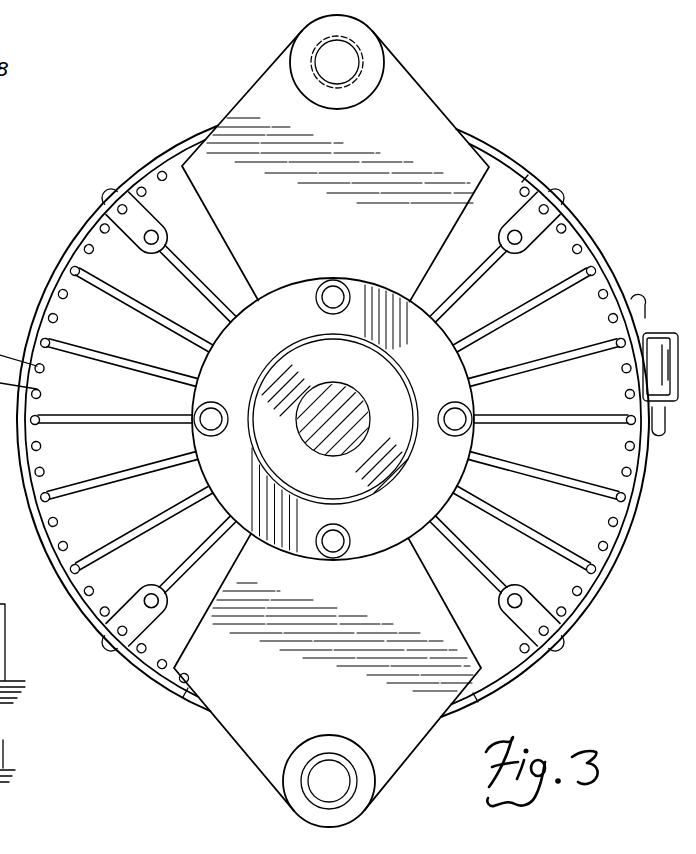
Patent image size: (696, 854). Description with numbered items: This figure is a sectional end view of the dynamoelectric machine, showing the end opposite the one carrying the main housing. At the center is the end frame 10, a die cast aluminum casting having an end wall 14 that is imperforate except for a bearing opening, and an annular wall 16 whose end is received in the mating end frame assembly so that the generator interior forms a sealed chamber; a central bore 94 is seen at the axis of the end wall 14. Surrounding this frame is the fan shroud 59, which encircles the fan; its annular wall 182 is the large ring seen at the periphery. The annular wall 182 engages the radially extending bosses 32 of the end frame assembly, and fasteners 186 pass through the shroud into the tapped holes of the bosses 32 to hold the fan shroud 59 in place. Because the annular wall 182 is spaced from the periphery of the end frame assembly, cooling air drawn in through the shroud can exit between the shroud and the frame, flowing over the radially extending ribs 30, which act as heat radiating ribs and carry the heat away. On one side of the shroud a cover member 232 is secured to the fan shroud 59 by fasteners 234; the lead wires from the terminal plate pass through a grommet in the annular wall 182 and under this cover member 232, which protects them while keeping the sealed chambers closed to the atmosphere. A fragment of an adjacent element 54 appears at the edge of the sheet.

The end frame 10 is at (416, 82).
The end wall 14 is at (566, 273).
The annular wall 16 is at (506, 176).
The radially extending ribs 30 is at (603, 549).
The radially extending bosses 32 is at (130, 194).
The fan shroud 59 is at (596, 605).
The central hub bore 94 is at (318, 400).
The annular wall 182 is at (77, 240).
The fasteners 186 is at (110, 183).
The cover member 232 is at (667, 336).
The fasteners 234 is at (637, 300).
The adjacent element (partial) 54 is at (12, 667).